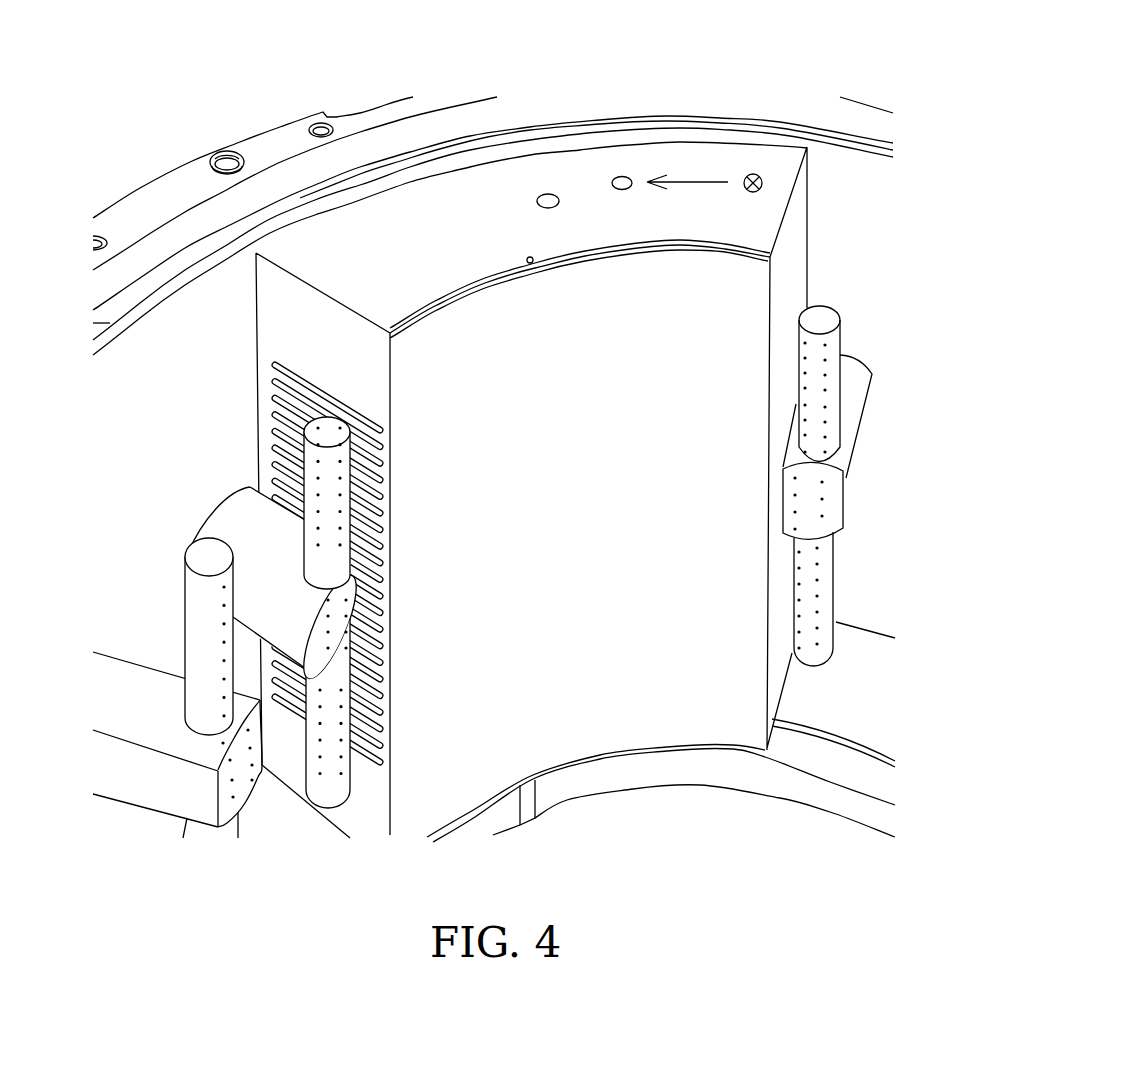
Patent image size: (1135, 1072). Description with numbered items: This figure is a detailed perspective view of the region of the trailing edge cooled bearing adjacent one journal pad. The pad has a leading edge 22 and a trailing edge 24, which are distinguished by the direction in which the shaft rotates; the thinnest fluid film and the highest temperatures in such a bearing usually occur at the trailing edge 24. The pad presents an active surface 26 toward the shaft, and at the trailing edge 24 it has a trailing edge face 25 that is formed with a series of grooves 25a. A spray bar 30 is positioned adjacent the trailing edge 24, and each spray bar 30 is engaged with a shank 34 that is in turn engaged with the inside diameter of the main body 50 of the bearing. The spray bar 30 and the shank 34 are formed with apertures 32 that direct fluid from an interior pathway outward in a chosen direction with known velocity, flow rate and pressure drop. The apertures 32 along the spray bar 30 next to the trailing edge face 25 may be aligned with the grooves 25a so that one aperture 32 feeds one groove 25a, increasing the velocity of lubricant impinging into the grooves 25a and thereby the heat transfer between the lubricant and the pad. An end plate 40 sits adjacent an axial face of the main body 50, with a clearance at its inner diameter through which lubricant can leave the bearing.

The leading edge 22 is at (770, 277).
The trailing edge 24 is at (388, 362).
The trailing edge face 25 is at (330, 345).
The grooves 25a is at (373, 433).
The active surface 26 is at (666, 76).
The spray bar 30 is at (827, 320).
The apertures 32 is at (822, 443).
The shank 34 is at (237, 513).
The end plate 40 is at (703, 768).
The main body 50 is at (212, 293).